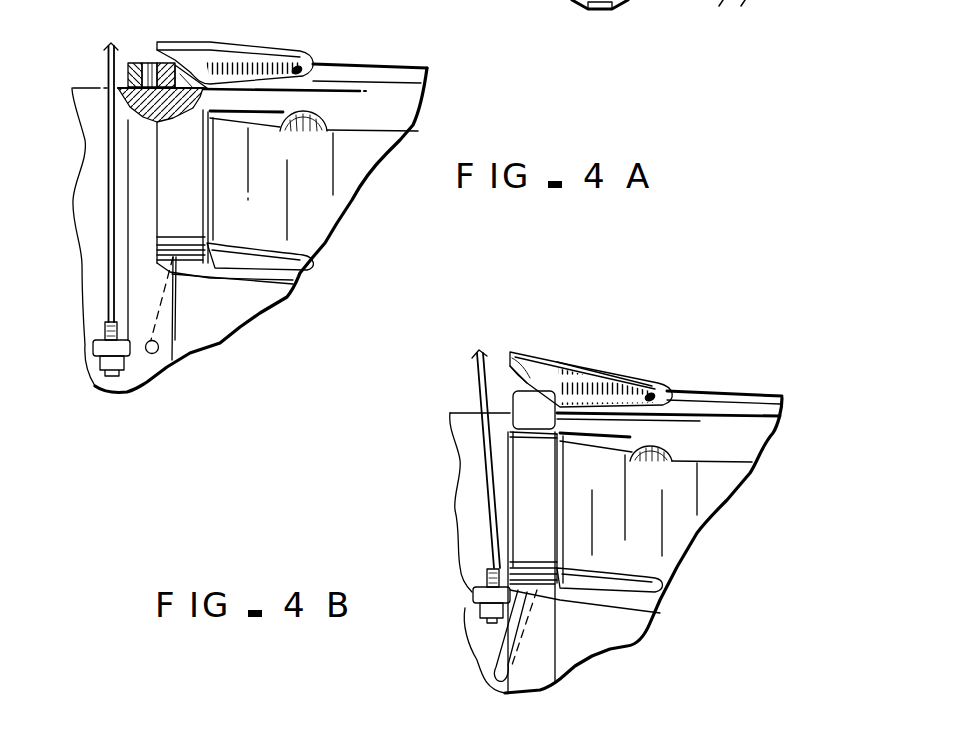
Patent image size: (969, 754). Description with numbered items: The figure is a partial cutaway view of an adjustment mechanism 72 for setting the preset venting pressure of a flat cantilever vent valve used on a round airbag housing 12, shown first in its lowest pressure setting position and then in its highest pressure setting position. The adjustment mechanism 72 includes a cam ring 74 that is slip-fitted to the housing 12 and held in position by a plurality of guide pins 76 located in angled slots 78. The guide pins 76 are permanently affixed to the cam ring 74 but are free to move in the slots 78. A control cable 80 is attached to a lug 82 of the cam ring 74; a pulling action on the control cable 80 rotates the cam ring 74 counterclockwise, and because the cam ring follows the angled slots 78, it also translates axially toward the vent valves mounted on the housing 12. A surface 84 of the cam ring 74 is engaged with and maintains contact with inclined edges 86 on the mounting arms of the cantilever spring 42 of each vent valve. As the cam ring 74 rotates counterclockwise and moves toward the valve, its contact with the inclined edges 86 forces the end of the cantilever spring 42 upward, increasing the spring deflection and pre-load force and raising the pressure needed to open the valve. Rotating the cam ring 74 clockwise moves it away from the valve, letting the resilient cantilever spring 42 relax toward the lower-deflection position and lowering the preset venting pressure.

In FIG. 4A, the airbag housing 12 is at (407, 110).
In FIG. 4B, the airbag housing 12 is at (753, 434).
In FIG. 4A, the cantilever spring 42 is at (234, 42).
In FIG. 4B, the cantilever spring 42 is at (586, 373).
In FIG. 4A, the adjustment mechanism 72 is at (392, 207).
In FIG. 4B, the adjustment mechanism 72 is at (414, 536).
In FIG. 4A, the cam ring 74 is at (106, 49).
In FIG. 4B, the cam ring 74 is at (510, 403).
In FIG. 4A, the guide pins 76 is at (125, 73).
In FIG. 4B, the guide pins 76 is at (535, 592).
In FIG. 4A, the angled slots 78 is at (181, 118).
In FIG. 4B, the angled slots 78 is at (496, 670).
In FIG. 4A, the control cable 80 is at (105, 230).
In FIG. 4B, the control cable 80 is at (452, 553).
In FIG. 4A, the lug 82 is at (100, 350).
In FIG. 4B, the lug 82 is at (473, 590).
In FIG. 4A, the surface 84 is at (175, 63).
In FIG. 4B, the surface 84 is at (553, 390).
In FIG. 4A, the inclined edges 86 is at (192, 78).
In FIG. 4B, the inclined edges 86 is at (518, 373).